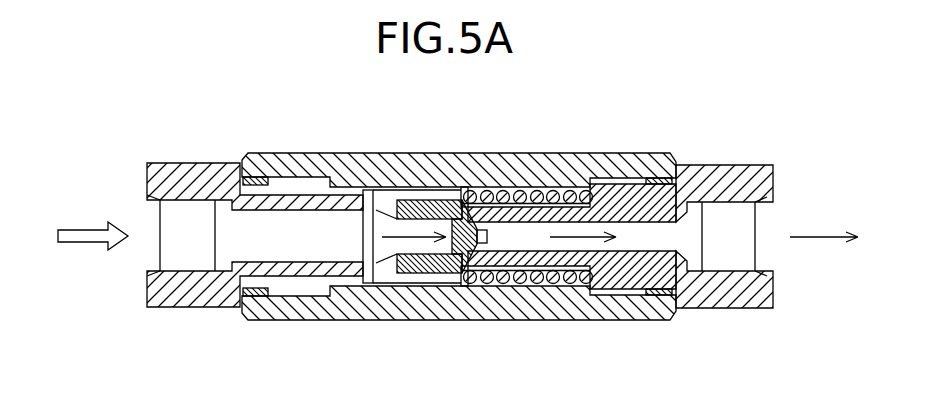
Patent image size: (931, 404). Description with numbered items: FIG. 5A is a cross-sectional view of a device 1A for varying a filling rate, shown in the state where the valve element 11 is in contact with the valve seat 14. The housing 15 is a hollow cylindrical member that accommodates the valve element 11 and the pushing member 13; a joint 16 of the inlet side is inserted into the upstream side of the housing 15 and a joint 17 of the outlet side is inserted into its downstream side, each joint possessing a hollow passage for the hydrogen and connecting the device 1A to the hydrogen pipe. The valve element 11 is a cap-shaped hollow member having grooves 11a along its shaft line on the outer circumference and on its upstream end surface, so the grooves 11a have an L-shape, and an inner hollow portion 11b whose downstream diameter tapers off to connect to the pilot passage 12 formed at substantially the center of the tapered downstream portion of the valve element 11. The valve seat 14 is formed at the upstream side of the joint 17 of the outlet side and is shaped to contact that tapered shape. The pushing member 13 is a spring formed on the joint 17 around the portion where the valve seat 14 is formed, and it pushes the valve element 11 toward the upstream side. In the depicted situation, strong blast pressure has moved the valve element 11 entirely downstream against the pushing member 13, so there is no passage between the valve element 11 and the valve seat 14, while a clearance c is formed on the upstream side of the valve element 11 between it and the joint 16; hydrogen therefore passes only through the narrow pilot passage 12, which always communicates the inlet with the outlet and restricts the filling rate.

The device for varying a filling rate 1A is at (664, 140).
The valve element 11 is at (423, 195).
The grooves 11a is at (408, 195).
The inner hollow portion 11b is at (483, 193).
The pilot passage 12 is at (486, 246).
The pushing member 13 is at (557, 192).
The valve seat 14 is at (470, 258).
The housing 15 is at (608, 163).
The joint of inlet side 16 is at (195, 172).
The joint of outlet side 17 is at (730, 172).
The clearance c is at (360, 192).